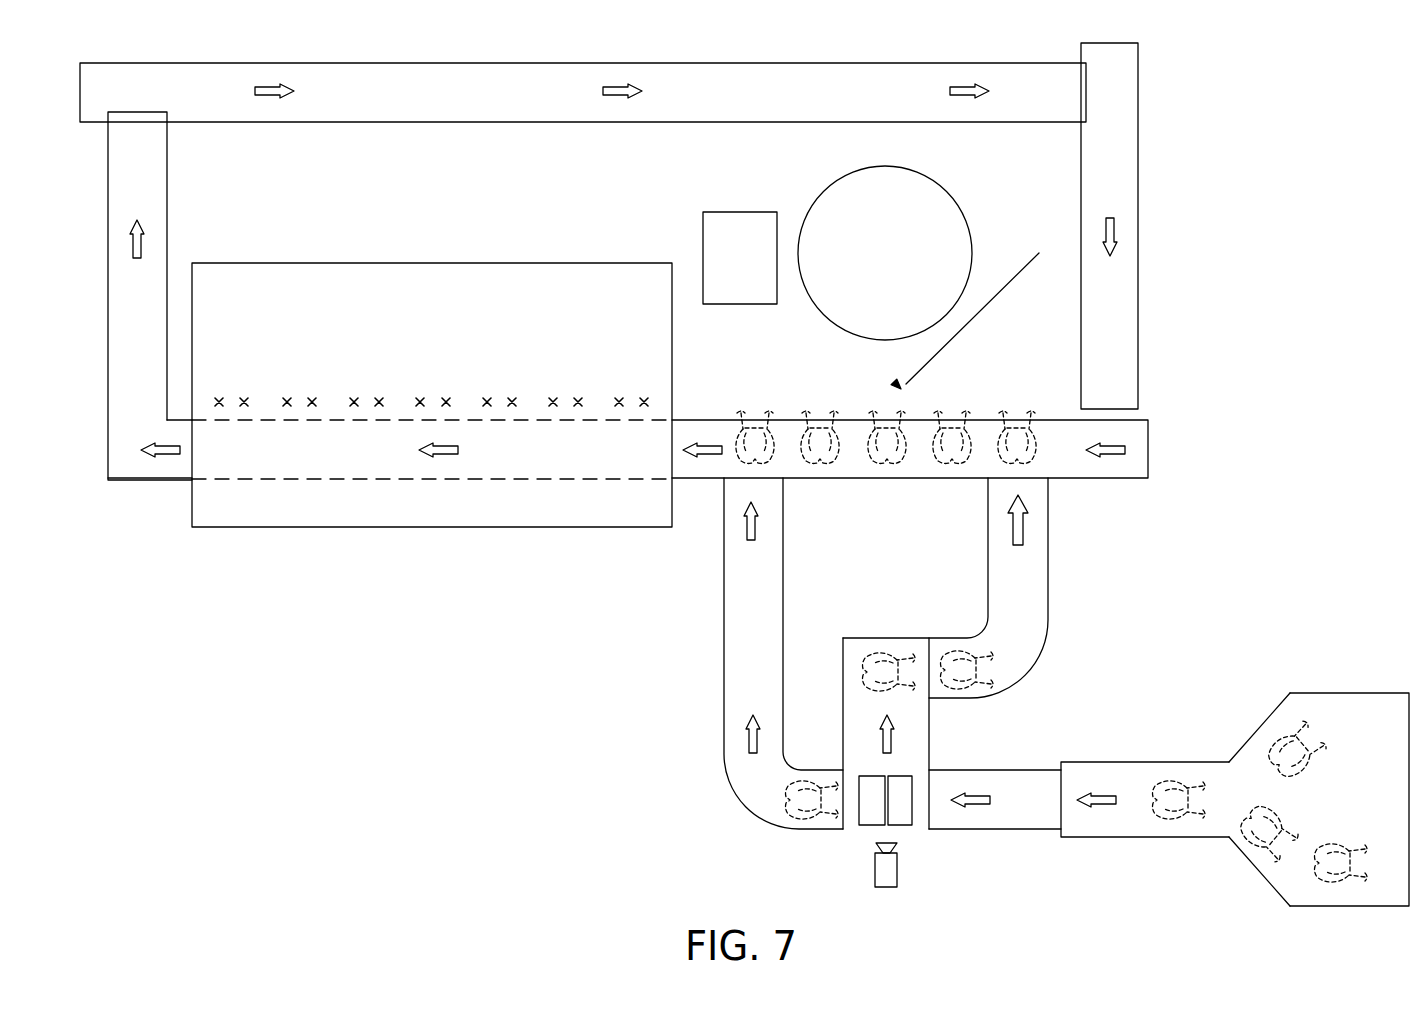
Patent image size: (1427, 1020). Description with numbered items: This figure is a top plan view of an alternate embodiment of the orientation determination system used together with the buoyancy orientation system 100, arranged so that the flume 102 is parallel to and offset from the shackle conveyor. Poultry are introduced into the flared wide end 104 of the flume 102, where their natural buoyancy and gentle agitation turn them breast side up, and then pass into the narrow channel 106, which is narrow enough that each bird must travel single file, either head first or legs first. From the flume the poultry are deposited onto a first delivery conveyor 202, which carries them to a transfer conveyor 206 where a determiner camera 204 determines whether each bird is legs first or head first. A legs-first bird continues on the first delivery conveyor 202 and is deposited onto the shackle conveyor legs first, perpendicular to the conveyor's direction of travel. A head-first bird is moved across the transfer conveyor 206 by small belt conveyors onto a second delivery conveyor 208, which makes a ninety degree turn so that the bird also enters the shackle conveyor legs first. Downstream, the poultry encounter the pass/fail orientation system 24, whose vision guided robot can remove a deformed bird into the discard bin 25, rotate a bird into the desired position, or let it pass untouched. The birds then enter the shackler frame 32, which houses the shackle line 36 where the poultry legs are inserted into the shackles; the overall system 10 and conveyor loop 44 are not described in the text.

The poultry processing system 10 is at (1250, 249).
The overhead shackle conveyor 44 is at (503, 100).
The shackler frame 32 is at (432, 358).
The shackle line 36 is at (299, 380).
The pass/fail orientation system 24 is at (806, 186).
The discard bin 25 is at (703, 223).
The first delivery conveyor 202 is at (765, 575).
The second delivery conveyor 208 is at (1035, 572).
The transfer conveyor 206 is at (922, 731).
The determiner camera 204 is at (875, 873).
The buoyancy orientation system 100 is at (1235, 770).
The narrow channel 106 is at (1131, 770).
The flume 102 is at (1265, 718).
The flared wide end 104 is at (1342, 710).